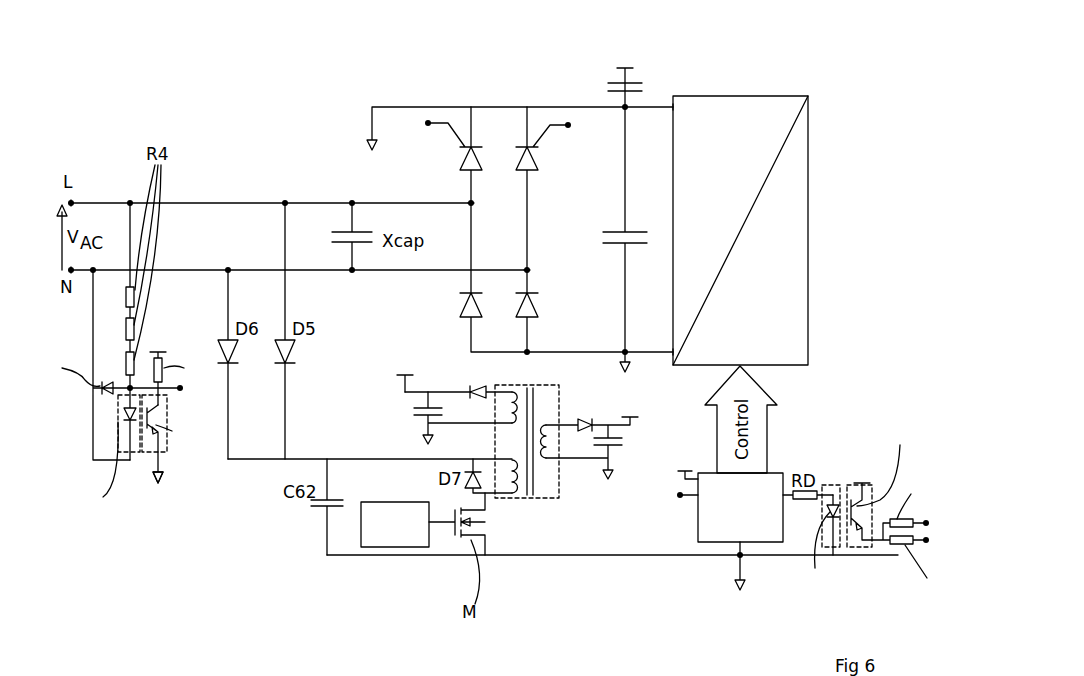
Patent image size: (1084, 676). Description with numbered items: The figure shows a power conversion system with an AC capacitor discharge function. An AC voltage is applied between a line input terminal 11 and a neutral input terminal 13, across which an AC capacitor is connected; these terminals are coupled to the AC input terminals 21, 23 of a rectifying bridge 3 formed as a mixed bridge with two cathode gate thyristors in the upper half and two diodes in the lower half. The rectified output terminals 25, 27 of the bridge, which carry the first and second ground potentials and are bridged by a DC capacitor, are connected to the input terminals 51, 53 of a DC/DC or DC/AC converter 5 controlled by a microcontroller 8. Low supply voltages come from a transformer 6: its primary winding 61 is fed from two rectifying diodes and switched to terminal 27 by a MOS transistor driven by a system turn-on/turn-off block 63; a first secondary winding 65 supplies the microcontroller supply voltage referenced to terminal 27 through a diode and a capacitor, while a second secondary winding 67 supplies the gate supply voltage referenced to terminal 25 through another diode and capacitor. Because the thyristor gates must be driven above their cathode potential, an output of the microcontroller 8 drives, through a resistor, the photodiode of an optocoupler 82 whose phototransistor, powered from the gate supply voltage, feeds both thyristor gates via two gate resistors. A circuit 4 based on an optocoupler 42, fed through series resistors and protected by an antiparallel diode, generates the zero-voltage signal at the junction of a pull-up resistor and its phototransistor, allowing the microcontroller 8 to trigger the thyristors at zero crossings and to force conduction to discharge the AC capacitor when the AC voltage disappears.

The rectifying bridge 3 is at (492, 106).
The circuit 4 is at (129, 429).
The DC/DC or DC/AC converter 5 is at (748, 96).
The transformer 6 is at (509, 445).
The microcontroller 8 is at (784, 473).
The input terminal 11 is at (72, 202).
The input terminal 13 is at (65, 272).
The AC input terminal 21 is at (470, 202).
The AC input terminal 23 is at (528, 270).
The rectified output terminal 25 is at (623, 107).
The rectified output terminal 27 is at (160, 462).
The optocoupler 42 is at (142, 454).
The input terminal 51 is at (675, 107).
The input terminal 53 is at (672, 351).
The primary winding 61 is at (508, 494).
The system turn-on/turn-off block 63 is at (383, 548).
The secondary winding 65 is at (544, 430).
The secondary winding 67 is at (509, 392).
The optocoupler 82 is at (845, 549).